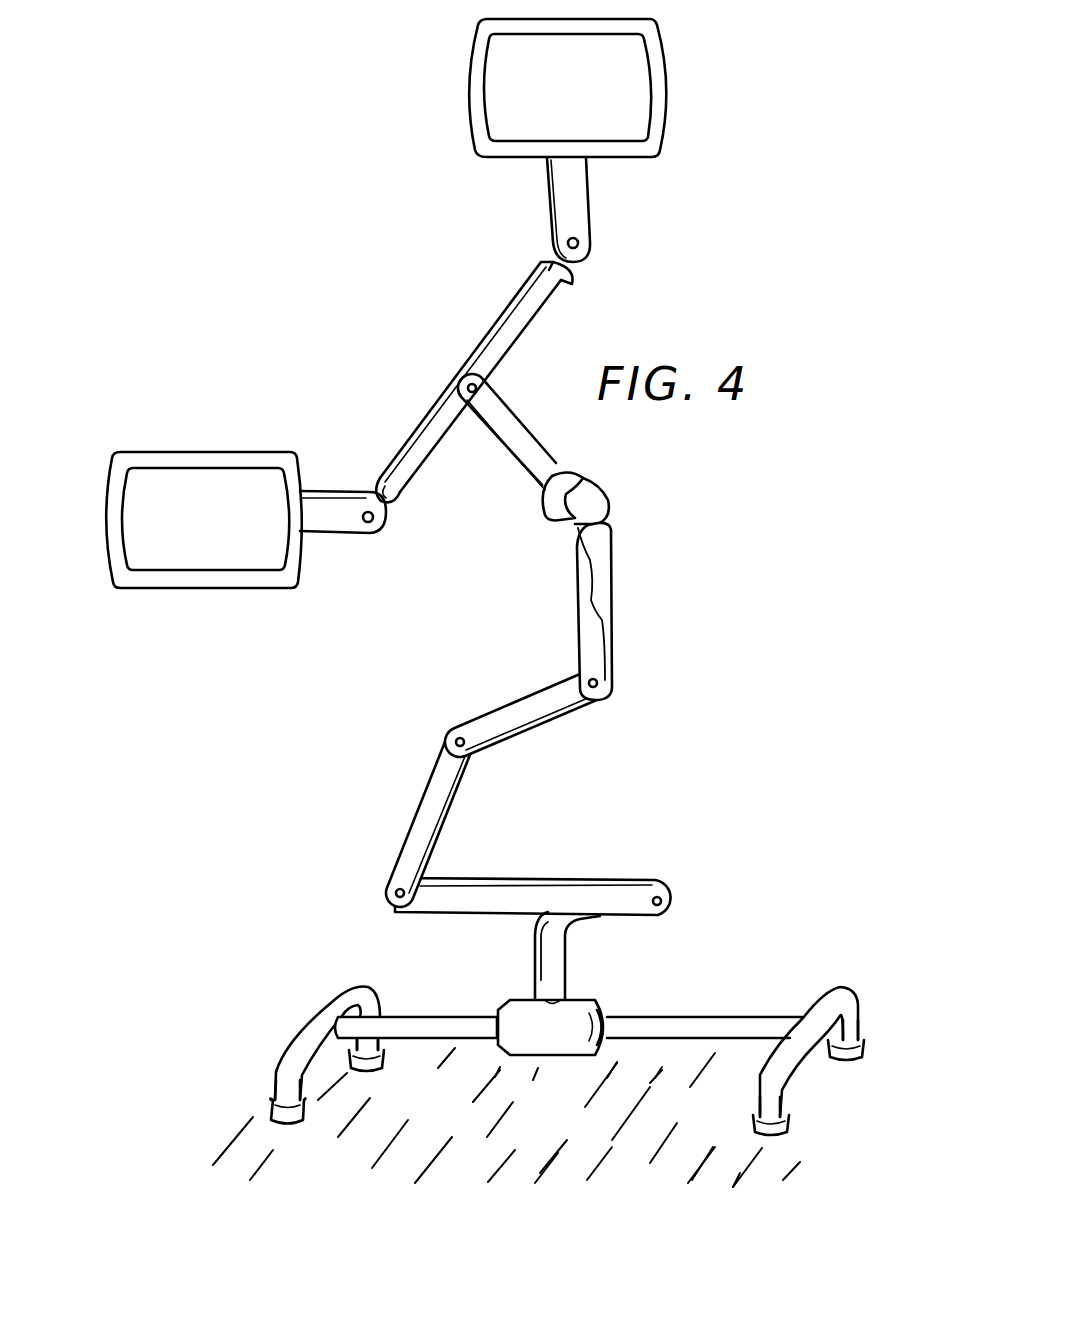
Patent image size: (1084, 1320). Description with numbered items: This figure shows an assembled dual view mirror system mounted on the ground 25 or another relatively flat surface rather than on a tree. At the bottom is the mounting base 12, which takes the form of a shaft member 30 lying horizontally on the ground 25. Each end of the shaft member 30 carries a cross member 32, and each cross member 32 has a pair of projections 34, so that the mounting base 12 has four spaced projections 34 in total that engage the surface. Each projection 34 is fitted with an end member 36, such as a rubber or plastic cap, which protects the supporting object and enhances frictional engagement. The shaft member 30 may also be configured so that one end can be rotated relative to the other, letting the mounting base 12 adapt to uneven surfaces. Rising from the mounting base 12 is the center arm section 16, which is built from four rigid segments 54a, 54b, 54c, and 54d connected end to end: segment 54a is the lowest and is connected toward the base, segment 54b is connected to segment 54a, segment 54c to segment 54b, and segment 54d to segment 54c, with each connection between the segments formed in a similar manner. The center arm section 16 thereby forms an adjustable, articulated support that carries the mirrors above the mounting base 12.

The mounting base 12 is at (563, 1044).
The center arm section 16 is at (515, 588).
The ground 25 is at (565, 1129).
The shaft member 30 is at (443, 1017).
The cross member 32 is at (300, 1029).
The projection 34 is at (395, 1000).
The end member 36 is at (370, 1070).
The rigid segment 54a is at (535, 878).
The rigid segment 54b is at (418, 808).
The rigid segment 54c is at (520, 735).
The rigid segment 54d is at (612, 612).